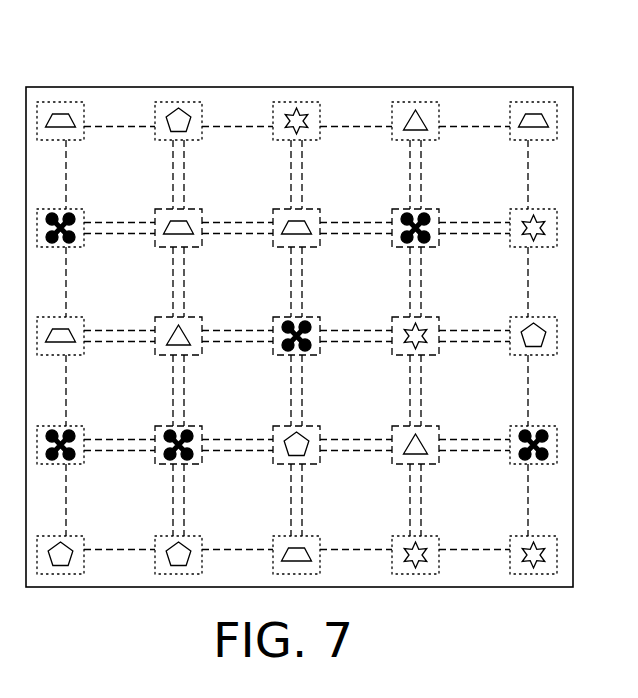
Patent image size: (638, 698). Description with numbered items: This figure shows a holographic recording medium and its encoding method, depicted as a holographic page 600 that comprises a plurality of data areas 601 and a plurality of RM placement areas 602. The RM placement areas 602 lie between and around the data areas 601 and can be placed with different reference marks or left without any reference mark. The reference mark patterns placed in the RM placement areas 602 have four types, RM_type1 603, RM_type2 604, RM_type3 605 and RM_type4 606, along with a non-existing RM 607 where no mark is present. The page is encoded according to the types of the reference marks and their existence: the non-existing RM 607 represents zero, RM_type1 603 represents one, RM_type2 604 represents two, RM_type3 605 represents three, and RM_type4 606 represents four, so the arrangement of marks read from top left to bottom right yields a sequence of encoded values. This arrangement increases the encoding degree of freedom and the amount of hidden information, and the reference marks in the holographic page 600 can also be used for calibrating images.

The holographic page 600 is at (523, 85).
The data areas 601 is at (357, 138).
The RM placement areas 602 is at (522, 327).
The RM_type1 603 is at (78, 110).
The RM_type2 604 is at (193, 110).
The RM_type3 605 is at (434, 112).
The RM_type4 606 is at (315, 110).
The non-existing RM 607 is at (78, 223).